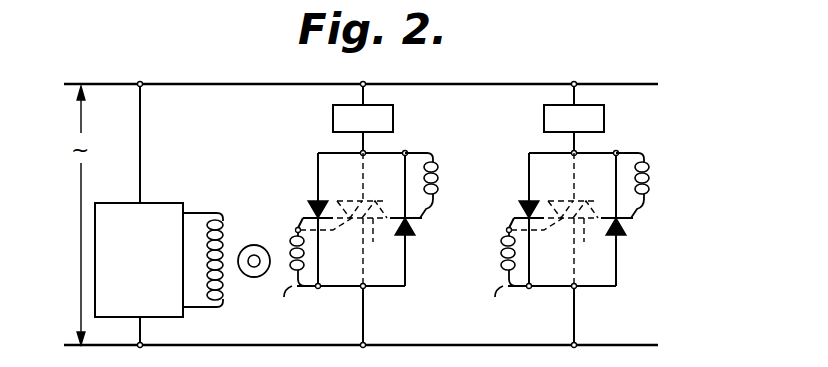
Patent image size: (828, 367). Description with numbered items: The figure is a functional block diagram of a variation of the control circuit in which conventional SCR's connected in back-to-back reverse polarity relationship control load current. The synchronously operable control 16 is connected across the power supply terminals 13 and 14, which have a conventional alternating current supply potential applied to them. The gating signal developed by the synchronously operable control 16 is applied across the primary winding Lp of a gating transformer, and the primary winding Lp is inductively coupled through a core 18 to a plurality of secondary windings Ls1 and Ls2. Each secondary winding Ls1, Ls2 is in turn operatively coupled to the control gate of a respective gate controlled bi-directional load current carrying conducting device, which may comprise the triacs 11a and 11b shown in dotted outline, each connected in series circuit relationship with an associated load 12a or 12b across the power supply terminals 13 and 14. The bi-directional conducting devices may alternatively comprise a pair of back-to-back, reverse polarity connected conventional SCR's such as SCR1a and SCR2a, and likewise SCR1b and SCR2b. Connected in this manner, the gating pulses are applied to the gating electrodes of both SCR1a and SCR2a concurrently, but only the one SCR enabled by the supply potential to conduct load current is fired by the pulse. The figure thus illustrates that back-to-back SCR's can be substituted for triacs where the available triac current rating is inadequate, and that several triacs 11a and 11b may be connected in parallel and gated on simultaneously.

The power supply terminal 14 is at (250, 84).
The power supply terminal 13 is at (418, 345).
The synchronously operable control 16 is at (163, 203).
The core 18 is at (254, 245).
The primary winding Lp is at (215, 267).
The load 12a is at (393, 116).
The load 12b is at (596, 118).
The triac 11a is at (352, 249).
The triac 11b is at (563, 249).
The SCR SCR1a is at (310, 208).
The SCR SCR2a is at (418, 233).
The SCR SCR1b is at (512, 209).
The SCR SCR2b is at (640, 235).
The secondary winding Ls1 is at (437, 170).
The secondary winding Ls2 is at (587, 234).